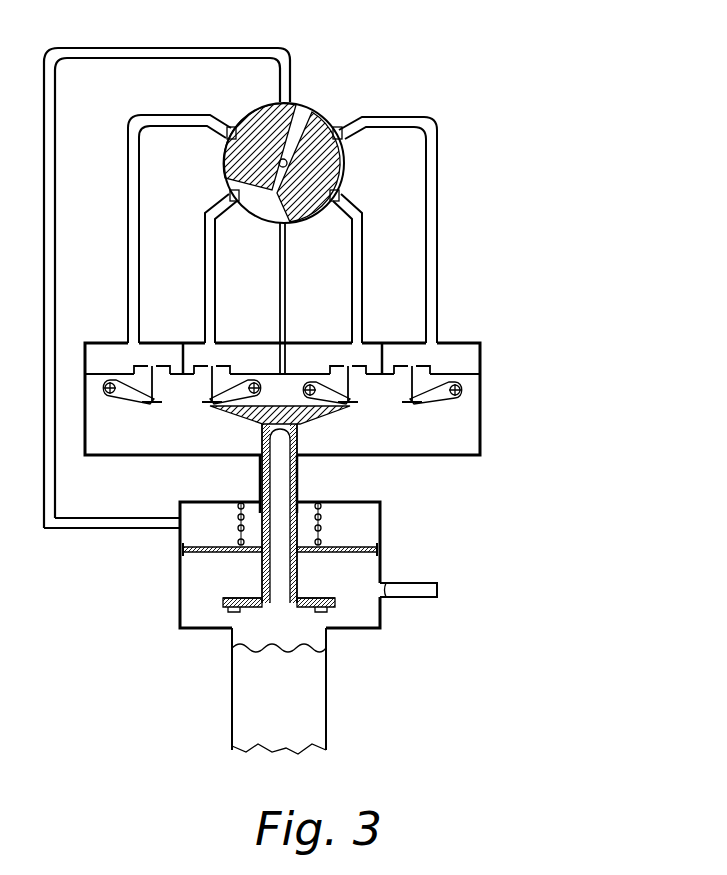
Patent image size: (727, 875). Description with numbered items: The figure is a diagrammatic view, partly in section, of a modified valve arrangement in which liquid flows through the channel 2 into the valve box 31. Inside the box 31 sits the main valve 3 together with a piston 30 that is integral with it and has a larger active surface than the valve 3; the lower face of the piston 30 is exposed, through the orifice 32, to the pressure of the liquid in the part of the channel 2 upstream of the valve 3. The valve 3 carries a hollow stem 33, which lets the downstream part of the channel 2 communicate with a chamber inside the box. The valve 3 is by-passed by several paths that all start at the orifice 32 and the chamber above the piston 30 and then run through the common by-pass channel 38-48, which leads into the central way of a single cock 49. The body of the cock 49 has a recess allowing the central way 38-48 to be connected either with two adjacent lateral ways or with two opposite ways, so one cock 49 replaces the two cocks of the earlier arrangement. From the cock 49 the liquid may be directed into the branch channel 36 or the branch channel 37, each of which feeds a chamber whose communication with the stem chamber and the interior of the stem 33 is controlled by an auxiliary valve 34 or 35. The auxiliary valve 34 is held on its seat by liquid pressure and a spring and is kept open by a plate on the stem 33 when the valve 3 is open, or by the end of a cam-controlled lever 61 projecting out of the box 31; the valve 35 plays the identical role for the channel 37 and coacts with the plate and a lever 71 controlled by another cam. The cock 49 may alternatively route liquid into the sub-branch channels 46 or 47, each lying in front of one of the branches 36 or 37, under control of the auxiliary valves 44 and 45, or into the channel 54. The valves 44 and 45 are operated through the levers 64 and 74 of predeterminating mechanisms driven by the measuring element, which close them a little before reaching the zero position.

The common by-pass channel 38-48 is at (193, 49).
The cock 49 is at (344, 174).
The channel 46 is at (133, 236).
The channel 47 is at (437, 293).
The channel 36 is at (213, 285).
The channel 37 is at (362, 294).
The channel 54 is at (285, 294).
The auxiliary valve 44 is at (160, 367).
The auxiliary valve 34 is at (208, 358).
The auxiliary valve 35 is at (346, 369).
The auxiliary valve 45 is at (419, 372).
The lever 64 is at (138, 399).
The lever 61 is at (239, 389).
The lever 71 is at (330, 375).
The lever 74 is at (448, 398).
The hollow stem 33 is at (261, 438).
The valve box 31 is at (177, 580).
The piston 30 is at (218, 546).
The orifice 32 is at (343, 550).
The main valve 3 is at (308, 605).
The channel 2 is at (232, 684).